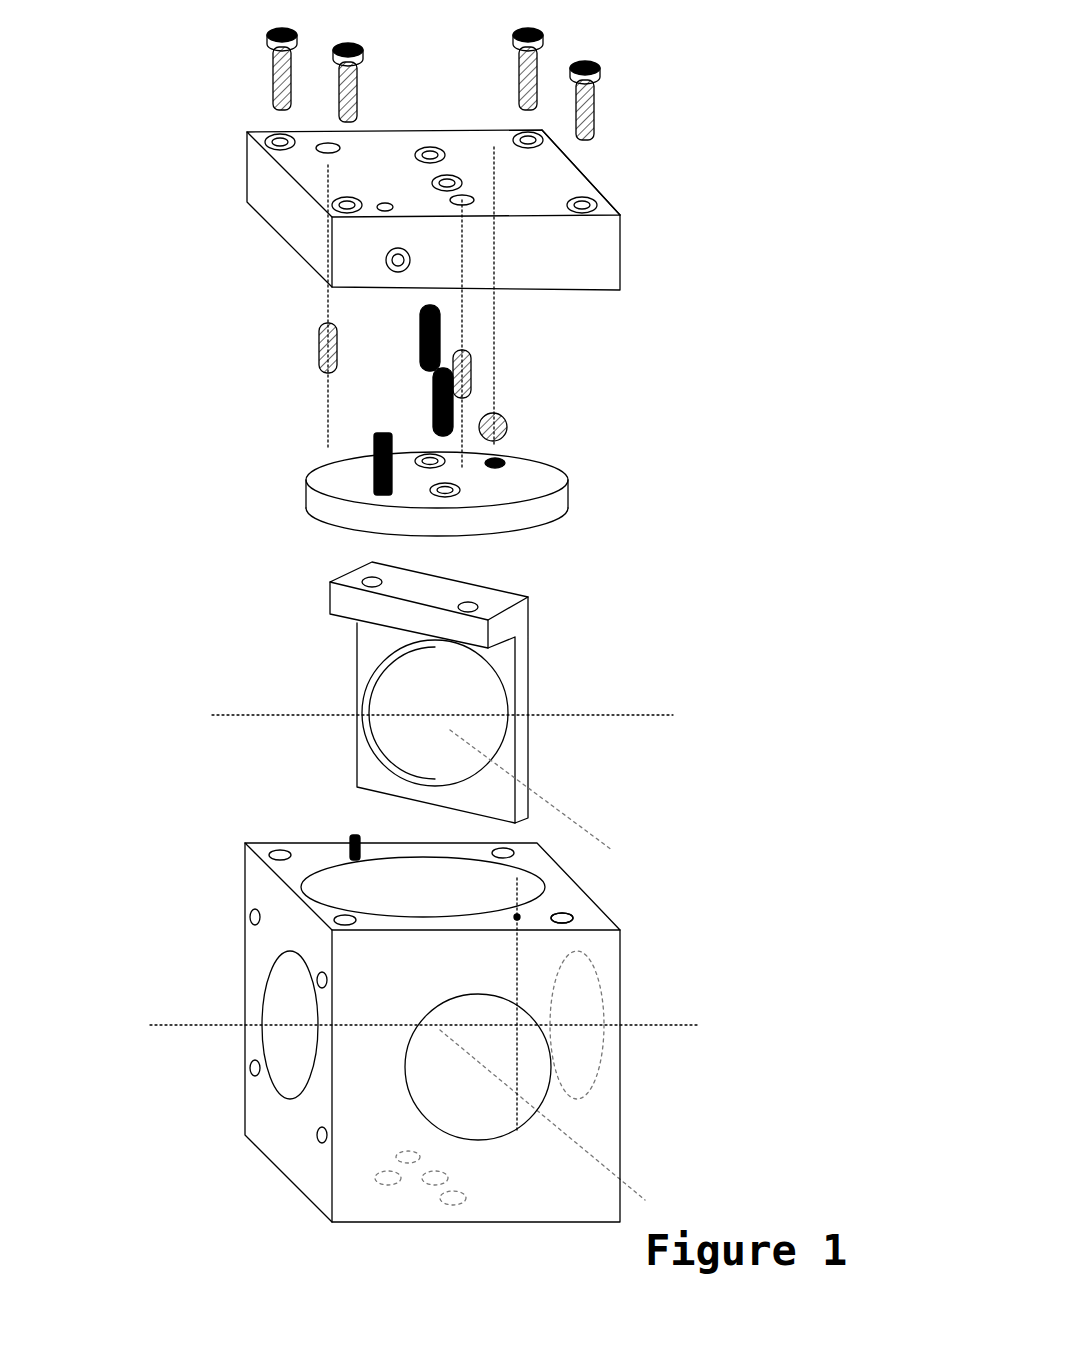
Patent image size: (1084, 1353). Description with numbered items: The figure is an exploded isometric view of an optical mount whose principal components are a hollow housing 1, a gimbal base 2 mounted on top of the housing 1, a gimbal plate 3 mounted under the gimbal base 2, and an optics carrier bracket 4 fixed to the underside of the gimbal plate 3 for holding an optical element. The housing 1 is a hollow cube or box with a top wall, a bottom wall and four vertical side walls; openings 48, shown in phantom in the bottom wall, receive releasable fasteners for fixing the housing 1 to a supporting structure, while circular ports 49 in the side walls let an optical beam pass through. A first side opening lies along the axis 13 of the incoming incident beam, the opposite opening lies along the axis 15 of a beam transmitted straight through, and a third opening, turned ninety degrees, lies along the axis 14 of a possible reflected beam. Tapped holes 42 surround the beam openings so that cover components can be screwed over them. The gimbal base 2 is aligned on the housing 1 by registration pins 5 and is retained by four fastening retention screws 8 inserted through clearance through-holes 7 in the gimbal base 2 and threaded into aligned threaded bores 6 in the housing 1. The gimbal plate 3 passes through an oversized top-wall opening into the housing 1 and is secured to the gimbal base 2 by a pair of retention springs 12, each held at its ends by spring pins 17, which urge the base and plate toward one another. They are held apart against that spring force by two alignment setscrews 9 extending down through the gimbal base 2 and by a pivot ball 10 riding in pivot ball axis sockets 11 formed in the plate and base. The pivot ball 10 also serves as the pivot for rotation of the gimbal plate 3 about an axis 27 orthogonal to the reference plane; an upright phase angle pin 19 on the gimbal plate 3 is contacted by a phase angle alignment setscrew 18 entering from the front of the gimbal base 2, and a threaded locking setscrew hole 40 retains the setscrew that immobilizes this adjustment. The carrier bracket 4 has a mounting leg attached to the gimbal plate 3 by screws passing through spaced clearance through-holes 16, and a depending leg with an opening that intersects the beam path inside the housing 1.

The housing 1 is at (242, 852).
The gimbal base 2 is at (632, 247).
The gimbal plate 3 is at (576, 497).
The optics carrier bracket 4 is at (540, 648).
The registration pins 5 is at (350, 836).
The threaded bores 6 is at (600, 908).
The clearance through-holes 7 is at (612, 195).
The fastening retention screws 8 is at (246, 45).
The alignment setscrews 9 is at (314, 347).
The pivot ball 10 is at (508, 417).
The pivot ball axis sockets 11 is at (508, 462).
The retention springs 12 is at (428, 400).
The axis of incoming incident beam 13 is at (210, 712).
The axis of outgoing reflected beam 14 is at (614, 842).
The axis of outgoing transmission beam 15 is at (668, 718).
The clearance through-holes 16 is at (383, 580).
The spring pins 17 is at (448, 180).
The phase angle alignment setscrew 18 is at (383, 265).
The phase angle pin 19 is at (372, 497).
The axis 27 is at (498, 317).
The threaded locking setscrew hole 40 is at (386, 203).
The tapped holes 42 is at (318, 978).
The openings 48 is at (420, 1188).
The circular ports 49 is at (258, 1012).